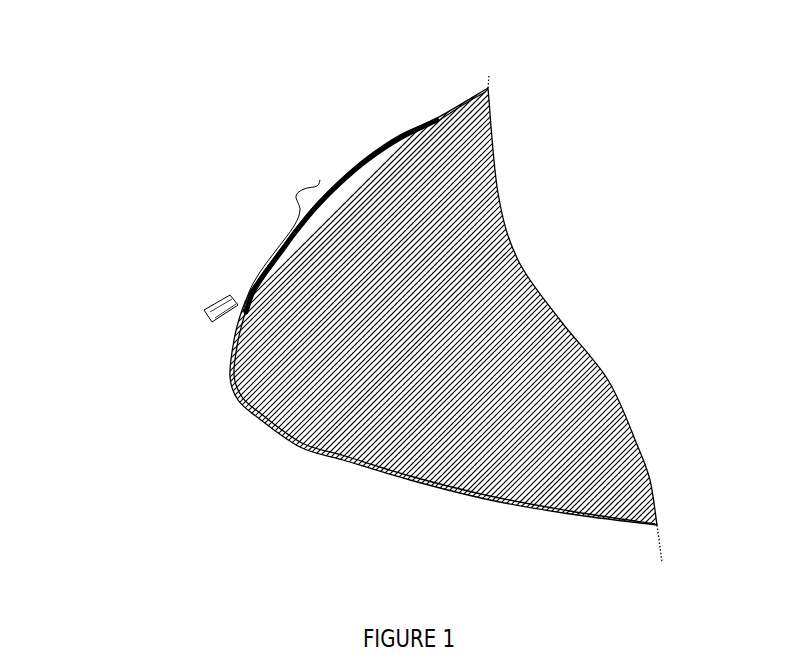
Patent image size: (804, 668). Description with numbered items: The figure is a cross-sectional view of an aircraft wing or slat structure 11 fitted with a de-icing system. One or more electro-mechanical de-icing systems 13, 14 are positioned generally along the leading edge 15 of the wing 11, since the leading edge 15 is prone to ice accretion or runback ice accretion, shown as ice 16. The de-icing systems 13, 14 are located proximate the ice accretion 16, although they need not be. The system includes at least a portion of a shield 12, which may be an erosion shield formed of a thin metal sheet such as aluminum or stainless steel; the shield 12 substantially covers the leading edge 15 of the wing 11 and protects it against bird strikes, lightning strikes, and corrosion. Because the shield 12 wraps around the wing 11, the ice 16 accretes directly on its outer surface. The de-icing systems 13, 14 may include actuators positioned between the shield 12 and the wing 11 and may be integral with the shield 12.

The aircraft wing or slat structure 11 is at (477, 273).
The shield 12 is at (302, 450).
The de-icing system 13 is at (380, 138).
The de-icing system 14 is at (282, 233).
The leading edge 15 is at (232, 377).
The ice 16 is at (228, 298).